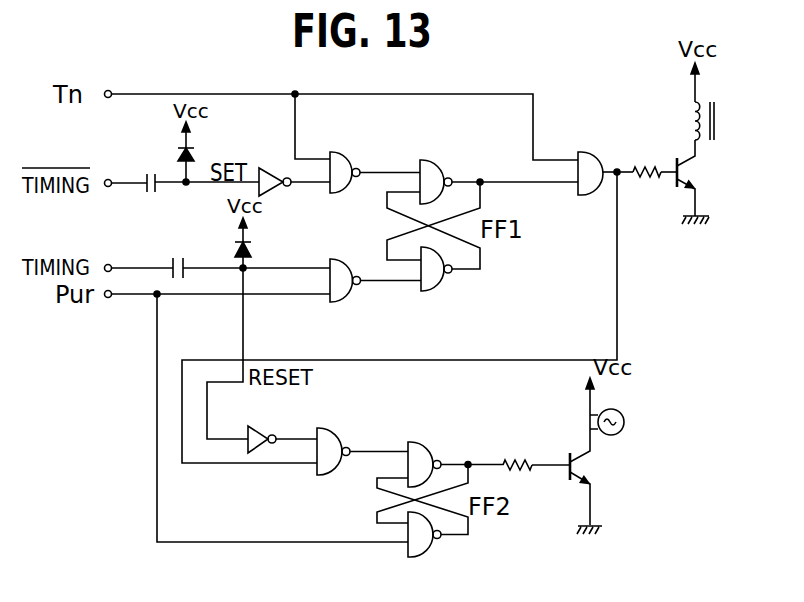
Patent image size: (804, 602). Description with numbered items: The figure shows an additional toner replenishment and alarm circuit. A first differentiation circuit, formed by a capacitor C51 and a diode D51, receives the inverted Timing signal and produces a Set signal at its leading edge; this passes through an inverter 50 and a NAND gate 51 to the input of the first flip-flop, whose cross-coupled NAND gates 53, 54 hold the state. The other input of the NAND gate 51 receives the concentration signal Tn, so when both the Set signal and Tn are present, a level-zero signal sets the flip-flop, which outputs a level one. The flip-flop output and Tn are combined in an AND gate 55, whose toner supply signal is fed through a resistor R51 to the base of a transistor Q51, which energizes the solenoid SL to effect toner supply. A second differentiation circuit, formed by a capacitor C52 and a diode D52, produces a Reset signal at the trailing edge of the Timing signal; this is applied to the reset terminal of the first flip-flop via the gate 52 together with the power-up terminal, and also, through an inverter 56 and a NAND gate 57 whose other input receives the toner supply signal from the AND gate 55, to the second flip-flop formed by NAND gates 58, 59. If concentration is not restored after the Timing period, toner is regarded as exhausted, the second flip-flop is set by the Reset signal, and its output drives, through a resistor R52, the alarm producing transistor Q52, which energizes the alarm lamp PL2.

The inverter 50 is at (270, 190).
The NAND gate 51 is at (345, 152).
The NAND gate 52 is at (345, 302).
The NAND gate of flip-flop FF1 53 is at (433, 160).
The NAND gate of flip-flop FF1 54 is at (435, 291).
The AND gate 55 is at (593, 152).
The inverter 56 is at (257, 431).
The NAND gate 57 is at (333, 428).
The NAND gate of flip-flop FF2 58 is at (425, 442).
The NAND gate of flip-flop FF2 59 is at (427, 556).
The capacitor C51 is at (161, 167).
The capacitor C52 is at (183, 254).
The diode D51 is at (214, 152).
The diode D52 is at (271, 243).
The resistor R51 is at (653, 159).
The resistor R52 is at (521, 455).
The transistor Q51 is at (700, 171).
The alarm producing transistor Q52 is at (594, 465).
The solenoid SL is at (721, 121).
The alarm lamp PL2 is at (631, 425).